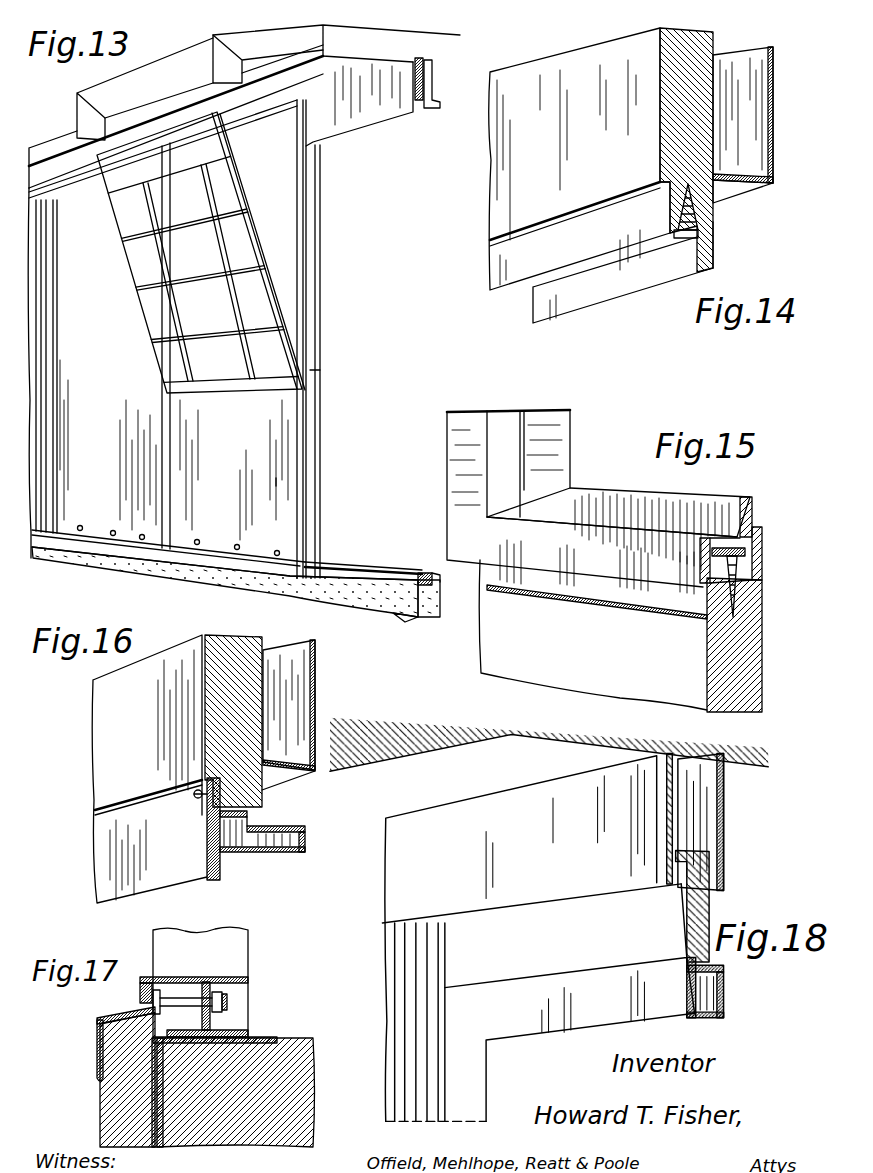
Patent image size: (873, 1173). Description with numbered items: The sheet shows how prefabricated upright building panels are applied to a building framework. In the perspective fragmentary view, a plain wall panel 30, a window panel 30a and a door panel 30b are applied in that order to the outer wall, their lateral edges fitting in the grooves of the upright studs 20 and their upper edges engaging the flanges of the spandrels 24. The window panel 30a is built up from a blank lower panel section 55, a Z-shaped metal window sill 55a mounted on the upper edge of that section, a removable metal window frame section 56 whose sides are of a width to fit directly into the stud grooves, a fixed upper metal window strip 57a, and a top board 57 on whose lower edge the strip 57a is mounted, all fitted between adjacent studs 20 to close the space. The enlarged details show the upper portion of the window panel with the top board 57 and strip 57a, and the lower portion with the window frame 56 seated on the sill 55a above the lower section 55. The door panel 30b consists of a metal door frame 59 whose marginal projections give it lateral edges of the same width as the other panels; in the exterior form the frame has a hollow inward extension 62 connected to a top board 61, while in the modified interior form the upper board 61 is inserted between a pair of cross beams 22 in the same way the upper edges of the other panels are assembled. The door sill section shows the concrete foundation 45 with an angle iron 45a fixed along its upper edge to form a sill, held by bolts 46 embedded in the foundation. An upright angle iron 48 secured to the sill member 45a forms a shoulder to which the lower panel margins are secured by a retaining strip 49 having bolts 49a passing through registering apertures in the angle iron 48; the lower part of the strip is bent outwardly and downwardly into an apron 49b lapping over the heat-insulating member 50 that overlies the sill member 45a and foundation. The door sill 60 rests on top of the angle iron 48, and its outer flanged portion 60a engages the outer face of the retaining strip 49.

In FIG. 13, the upright studs 20 is at (166, 246).
In FIG. 18, the upright studs 20 is at (422, 942).
In FIG. 18, the cross beams 22 is at (530, 787).
In FIG. 13, the spandrels 24 is at (434, 85).
In FIG. 14, the spandrels 24 is at (774, 146).
In FIG. 16, the spandrels 24 is at (362, 703).
In FIG. 13, the plain wall panel 30 is at (223, 340).
In FIG. 13, the window panel 30a is at (243, 468).
In FIG. 13, the door panel 30b is at (380, 293).
In FIG. 17, the foundation 45 is at (357, 1080).
In FIG. 17, the angle iron sill member 45a is at (257, 1080).
In FIG. 13, the bolts 46 is at (416, 653).
In FIG. 13, the upright angle iron 48 is at (436, 558).
In FIG. 17, the upright angle iron 48 is at (312, 989).
In FIG. 17, the retaining strip 49 is at (102, 1006).
In FIG. 17, the bolts 49a is at (320, 1020).
In FIG. 17, the apron 49b is at (88, 1054).
In FIG. 17, the heat-insulating member 50 is at (115, 1101).
In FIG. 13, the lower panel section 55 is at (277, 482).
In FIG. 15, the lower panel section 55 is at (733, 663).
In FIG. 15, the metal window sill 55a is at (813, 551).
In FIG. 13, the removable metal window frame section 56 is at (282, 250).
In FIG. 15, the removable metal window frame section 56 is at (604, 505).
In FIG. 13, the top board 57 is at (149, 148).
In FIG. 14, the top board 57 is at (673, 113).
In FIG. 14, the fixed upper metal window strip 57a is at (770, 246).
In FIG. 13, the metal door frame 59 is at (312, 373).
In FIG. 16, the metal door frame 59 is at (195, 896).
In FIG. 13, the door sill 60 is at (362, 558).
In FIG. 17, the door sill 60 is at (210, 976).
In FIG. 17, the outer flanged portion 60a is at (149, 934).
In FIG. 13, the top board 61 is at (369, 100).
In FIG. 16, the top board 61 is at (140, 713).
In FIG. 18, the top board 61 is at (672, 892).
In FIG. 16, the hollow inward extension 62 is at (306, 857).
In FIG. 18, the hollow inward extension 62 is at (685, 965).